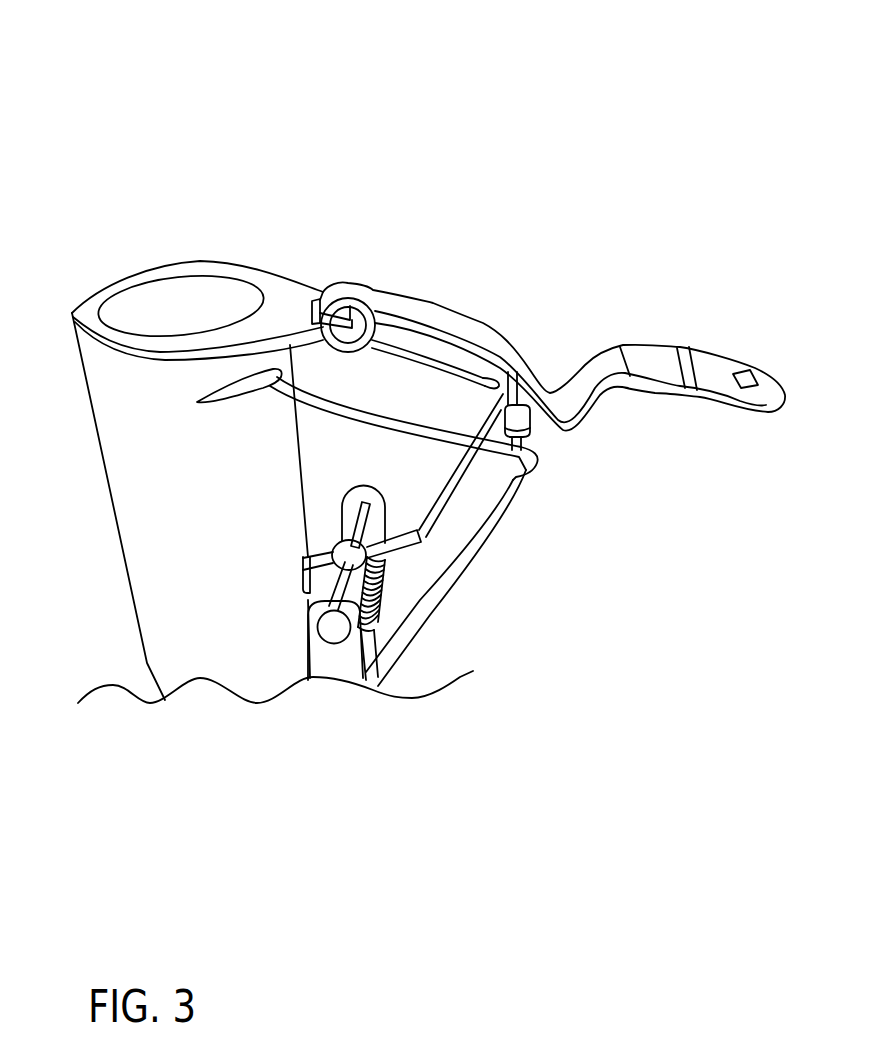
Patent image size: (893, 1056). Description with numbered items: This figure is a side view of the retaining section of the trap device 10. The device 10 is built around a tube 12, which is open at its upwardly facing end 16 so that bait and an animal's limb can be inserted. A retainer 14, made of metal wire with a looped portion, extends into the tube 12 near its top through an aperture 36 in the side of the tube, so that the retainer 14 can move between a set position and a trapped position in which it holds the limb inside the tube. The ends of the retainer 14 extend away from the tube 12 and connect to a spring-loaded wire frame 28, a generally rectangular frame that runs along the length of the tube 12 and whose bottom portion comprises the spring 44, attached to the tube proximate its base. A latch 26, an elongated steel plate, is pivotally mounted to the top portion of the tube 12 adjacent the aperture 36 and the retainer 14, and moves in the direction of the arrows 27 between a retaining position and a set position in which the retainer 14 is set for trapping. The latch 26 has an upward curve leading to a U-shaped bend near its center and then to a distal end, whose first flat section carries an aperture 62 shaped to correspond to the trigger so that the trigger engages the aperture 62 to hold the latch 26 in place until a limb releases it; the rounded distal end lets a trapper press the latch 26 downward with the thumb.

The device 10 is at (253, 143).
The tube 12 is at (110, 582).
The retainer 14 is at (540, 460).
The upwardly facing end 16 is at (177, 300).
The latch 26 is at (481, 318).
The arrows 27 is at (675, 583).
The spring-loaded wire frame 28 is at (457, 570).
The aperture 36 is at (246, 387).
The spring 44 is at (378, 603).
The aperture 62 is at (749, 376).